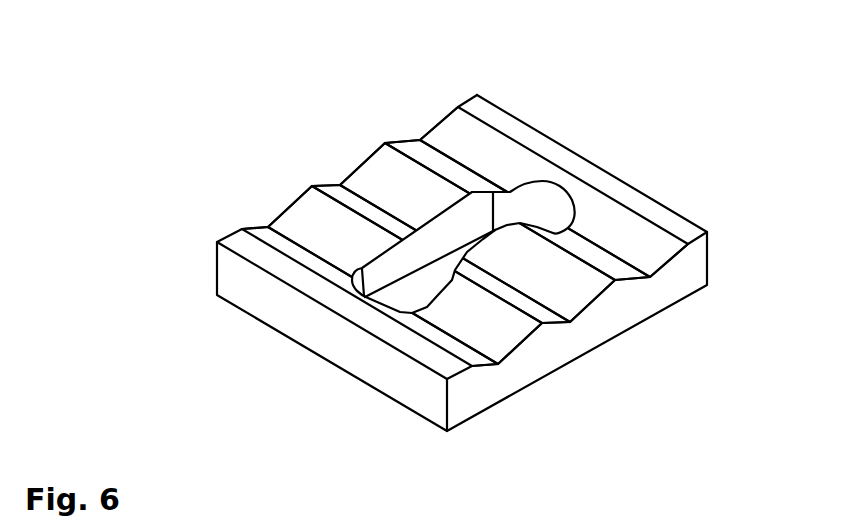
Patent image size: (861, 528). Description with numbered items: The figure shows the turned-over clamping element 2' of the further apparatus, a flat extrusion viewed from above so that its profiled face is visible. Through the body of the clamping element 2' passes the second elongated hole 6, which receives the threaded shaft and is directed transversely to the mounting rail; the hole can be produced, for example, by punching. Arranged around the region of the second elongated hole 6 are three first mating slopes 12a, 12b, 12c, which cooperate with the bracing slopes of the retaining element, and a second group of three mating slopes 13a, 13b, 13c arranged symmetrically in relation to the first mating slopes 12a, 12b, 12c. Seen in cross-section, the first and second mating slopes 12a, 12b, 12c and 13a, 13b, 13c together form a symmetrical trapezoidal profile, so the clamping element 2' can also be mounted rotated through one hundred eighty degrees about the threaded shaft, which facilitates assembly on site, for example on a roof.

The clamping element 2' is at (522, 263).
The second elongated hole 6 is at (557, 182).
The first mating slope 12a is at (263, 235).
The first mating slope 12b is at (338, 187).
The first mating slope 12c is at (412, 148).
The second mating slope 13a is at (303, 220).
The second mating slope 13b is at (375, 170).
The second mating slope 13c is at (453, 132).